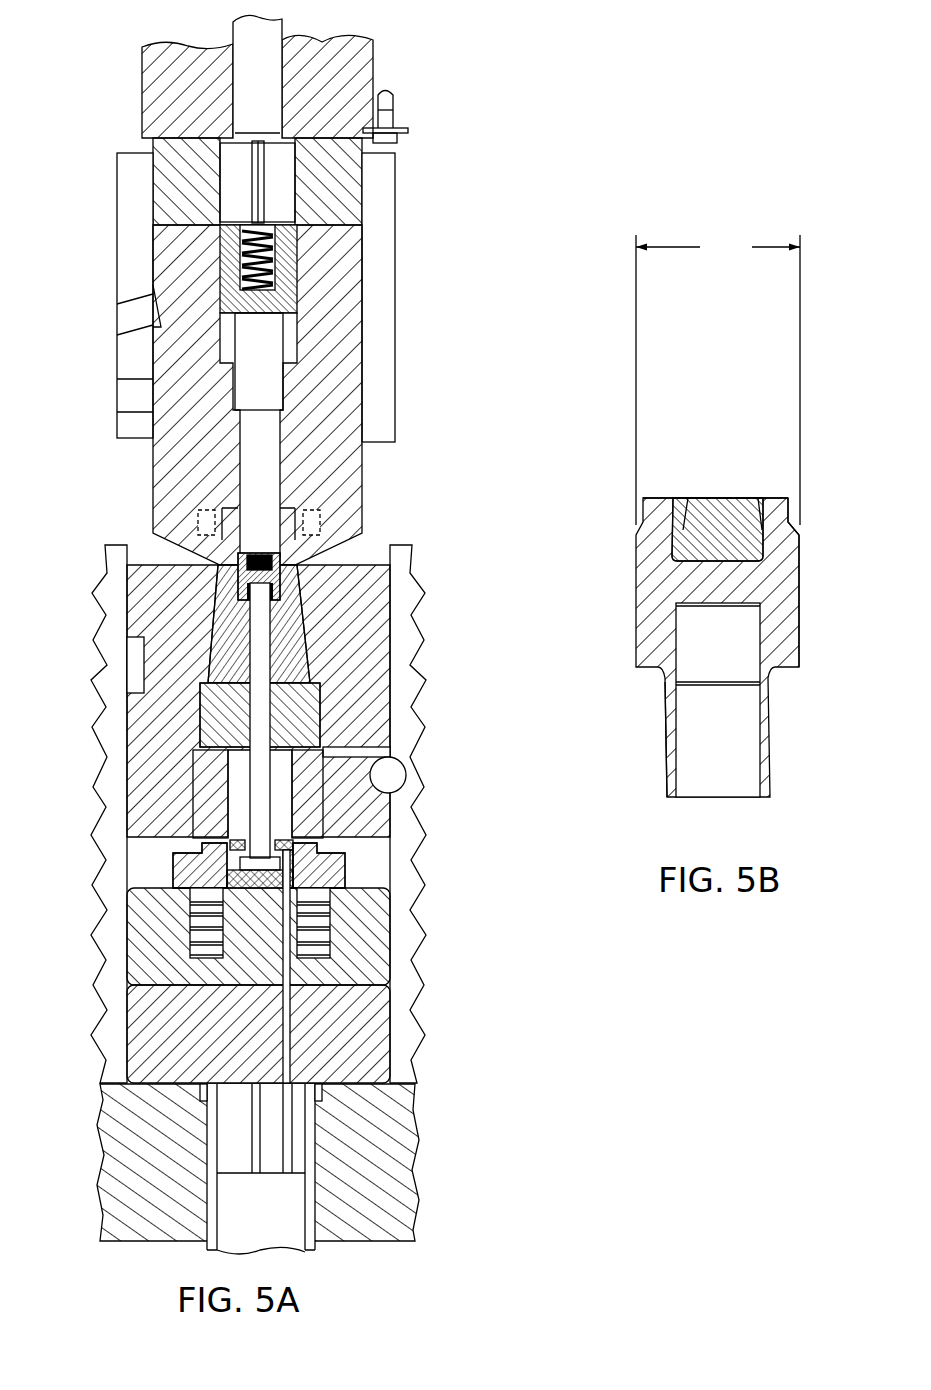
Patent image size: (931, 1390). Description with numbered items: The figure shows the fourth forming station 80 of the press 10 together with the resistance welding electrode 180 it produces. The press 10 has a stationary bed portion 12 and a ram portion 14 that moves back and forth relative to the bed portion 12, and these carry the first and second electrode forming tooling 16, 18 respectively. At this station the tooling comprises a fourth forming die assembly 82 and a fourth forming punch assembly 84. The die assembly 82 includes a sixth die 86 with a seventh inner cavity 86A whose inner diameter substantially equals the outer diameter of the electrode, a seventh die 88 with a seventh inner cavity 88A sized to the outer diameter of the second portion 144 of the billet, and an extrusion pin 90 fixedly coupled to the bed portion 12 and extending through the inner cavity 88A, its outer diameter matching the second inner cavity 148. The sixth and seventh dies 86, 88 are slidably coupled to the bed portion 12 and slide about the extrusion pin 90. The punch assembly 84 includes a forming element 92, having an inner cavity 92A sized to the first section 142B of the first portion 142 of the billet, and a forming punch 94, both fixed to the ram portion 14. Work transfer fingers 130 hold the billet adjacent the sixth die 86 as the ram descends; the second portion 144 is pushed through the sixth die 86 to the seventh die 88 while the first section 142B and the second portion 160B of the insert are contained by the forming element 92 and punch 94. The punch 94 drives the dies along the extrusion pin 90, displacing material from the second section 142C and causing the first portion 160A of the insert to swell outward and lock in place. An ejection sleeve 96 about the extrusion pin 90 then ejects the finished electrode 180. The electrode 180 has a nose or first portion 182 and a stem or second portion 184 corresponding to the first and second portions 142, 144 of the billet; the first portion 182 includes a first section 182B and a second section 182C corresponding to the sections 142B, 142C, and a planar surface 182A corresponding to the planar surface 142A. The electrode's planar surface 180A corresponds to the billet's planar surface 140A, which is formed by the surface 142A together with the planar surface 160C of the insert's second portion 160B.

In FIG. 5A, the press 10 is at (295, 634).
In FIG. 5A, the bed portion 12 is at (125, 1216).
In FIG. 5A, the ram portion 14 is at (125, 200).
In FIG. 5A, the first electrode forming tooling 16 is at (445, 282).
In FIG. 5A, the second electrode forming tooling 18 is at (327, 814).
In FIG. 5A, the fourth forming station 80 is at (302, 397).
In FIG. 5A, the fourth forming die assembly 82 is at (380, 706).
In FIG. 5A, the fourth forming punch assembly 84 is at (428, 440).
In FIG. 5A, the sixth die 86 is at (355, 581).
In FIG. 5A, the seventh inner cavity 86A is at (285, 562).
In FIG. 5A, the seventh die 88 is at (346, 626).
In FIG. 5A, the seventh inner cavity 88A is at (305, 672).
In FIG. 5A, the extrusion pin 90 is at (260, 803).
In FIG. 5A, the forming element 92 is at (266, 701).
In FIG. 5A, the inner cavity 92A is at (212, 598).
In FIG. 5A, the forming punch 94 is at (258, 485).
In FIG. 5A, the ejection sleeve 96 is at (297, 843).
In FIG. 5A, the work transfer fingers 130 is at (205, 523).
In FIG. 5B, the substantially planar surface 140A is at (717, 399).
In FIG. 5B, the substantially planar surface 180A is at (756, 486).
In FIG. 5B, the first portion 142 is at (710, 574).
In FIG. 5B, the first portion 182 is at (710, 574).
In FIG. 5B, the substantially planar surface 142A is at (833, 455).
In FIG. 5B, the substantially planar surface 182A is at (780, 498).
In FIG. 5B, the first section 142B is at (850, 526).
In FIG. 5B, the first section 182B is at (808, 534).
In FIG. 5B, the second section 142C is at (850, 604).
In FIG. 5B, the second section 182C is at (808, 671).
In FIG. 5B, the second portion 144 is at (593, 739).
In FIG. 5B, the second portion 184 is at (665, 737).
In FIG. 5B, the second inner cavity 148 is at (760, 760).
In FIG. 5B, the first portion 160A is at (661, 474).
In FIG. 5B, the second portion 160B is at (703, 474).
In FIG. 5B, the substantially planar surface 160C is at (707, 498).
In FIG. 5B, the resistance welding electrode 180 is at (707, 539).